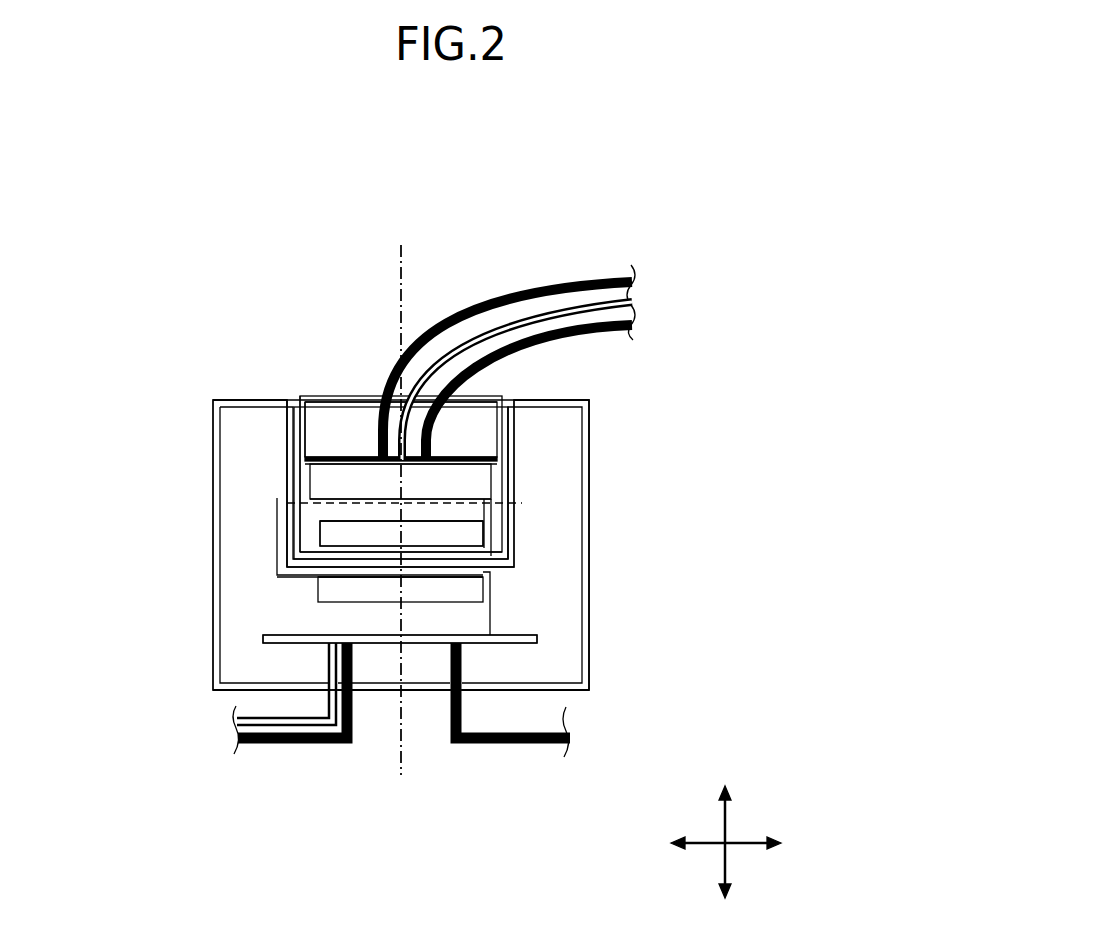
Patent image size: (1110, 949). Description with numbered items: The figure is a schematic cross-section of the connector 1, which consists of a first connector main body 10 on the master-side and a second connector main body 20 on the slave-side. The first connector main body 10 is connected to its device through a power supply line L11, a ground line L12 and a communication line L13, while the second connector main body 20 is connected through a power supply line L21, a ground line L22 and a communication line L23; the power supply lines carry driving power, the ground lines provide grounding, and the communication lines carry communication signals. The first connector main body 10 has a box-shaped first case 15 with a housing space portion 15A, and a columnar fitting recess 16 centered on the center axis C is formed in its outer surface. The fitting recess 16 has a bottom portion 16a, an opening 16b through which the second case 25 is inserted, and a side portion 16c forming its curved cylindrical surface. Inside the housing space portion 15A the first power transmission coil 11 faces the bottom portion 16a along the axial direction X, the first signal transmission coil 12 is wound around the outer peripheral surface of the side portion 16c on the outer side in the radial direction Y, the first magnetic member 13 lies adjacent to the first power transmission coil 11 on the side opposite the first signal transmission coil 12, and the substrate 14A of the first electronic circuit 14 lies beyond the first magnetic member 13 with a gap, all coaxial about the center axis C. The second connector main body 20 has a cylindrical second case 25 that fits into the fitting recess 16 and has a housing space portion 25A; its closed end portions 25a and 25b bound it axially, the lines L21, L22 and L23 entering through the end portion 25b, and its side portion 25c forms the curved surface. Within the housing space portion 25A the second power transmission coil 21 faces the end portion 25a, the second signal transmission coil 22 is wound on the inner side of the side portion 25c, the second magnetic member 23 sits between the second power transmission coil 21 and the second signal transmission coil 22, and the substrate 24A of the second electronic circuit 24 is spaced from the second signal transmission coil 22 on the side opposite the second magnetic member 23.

The connector 1 is at (713, 445).
The first connector main body 10 is at (612, 658).
The first power transmission coil 11 is at (317, 593).
The first signal transmission coil 12 is at (277, 498).
The first magnetic member 13 is at (318, 575).
The first electronic circuit 14 is at (400, 736).
The substrate 14A is at (374, 644).
The first case 15 is at (220, 532).
The housing space portion 15A is at (563, 658).
The fitting recess 16 is at (507, 440).
The bottom portion 16a is at (425, 578).
The opening 16b is at (293, 398).
The side portion 16c is at (290, 440).
The second connector main body 20 is at (522, 462).
The second power transmission coil 21 is at (427, 550).
The second signal transmission coil 22 is at (420, 497).
The second magnetic member 23 is at (341, 521).
The second electronic circuit 24 is at (401, 409).
The substrate 24A is at (358, 457).
The second case 25 is at (352, 396).
The housing space portion 25A is at (315, 415).
The end portion 25a is at (462, 573).
The end portion 25b is at (383, 392).
The side portion 25c is at (508, 488).
The power supply line L11 is at (268, 727).
The ground line L12 is at (297, 745).
The communication line L13 is at (533, 745).
The power supply line L21 is at (633, 293).
The ground line L22 is at (581, 275).
The communication line L23 is at (608, 336).
The center axis C is at (402, 262).
The axial direction X is at (727, 818).
The radial direction Y is at (750, 848).